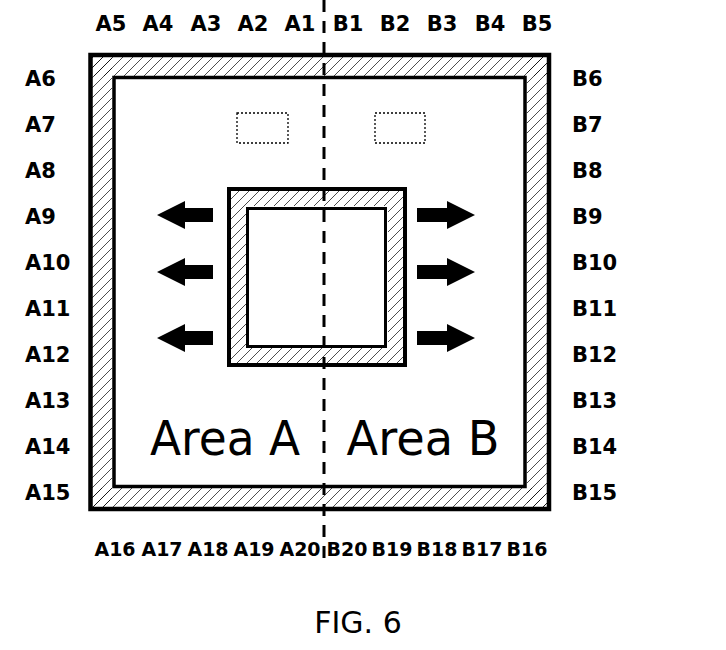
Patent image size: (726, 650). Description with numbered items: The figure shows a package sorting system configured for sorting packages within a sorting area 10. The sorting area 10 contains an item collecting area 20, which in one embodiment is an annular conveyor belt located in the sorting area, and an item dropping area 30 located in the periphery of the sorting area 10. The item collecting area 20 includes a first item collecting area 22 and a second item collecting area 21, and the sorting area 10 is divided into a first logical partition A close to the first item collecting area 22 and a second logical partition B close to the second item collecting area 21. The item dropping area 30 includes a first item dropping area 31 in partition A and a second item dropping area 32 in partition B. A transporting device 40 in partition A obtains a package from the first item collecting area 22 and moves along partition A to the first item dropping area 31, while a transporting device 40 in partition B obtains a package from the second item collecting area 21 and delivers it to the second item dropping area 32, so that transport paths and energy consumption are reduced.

The sorting area 10 is at (386, 282).
The item collecting area 20 is at (432, 231).
The second item collecting area 21 is at (403, 313).
The first item collecting area 22 is at (220, 233).
The item dropping area 30 is at (537, 203).
The first item dropping area 31 is at (102, 257).
The second item dropping area 32 is at (533, 433).
The transporting device 40 is at (392, 144).